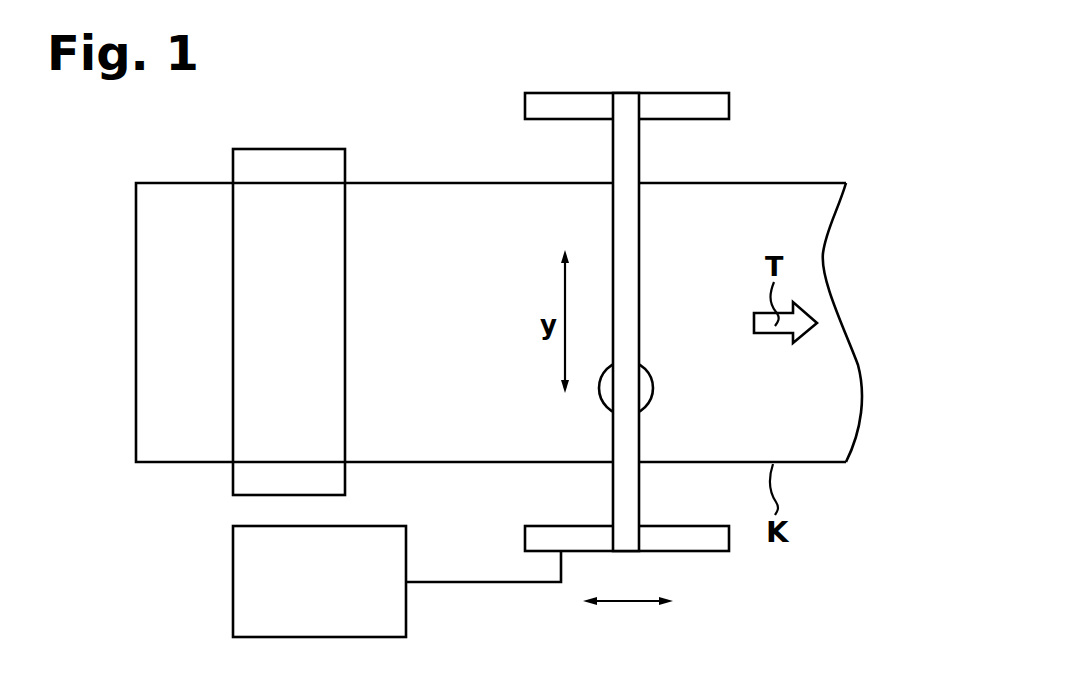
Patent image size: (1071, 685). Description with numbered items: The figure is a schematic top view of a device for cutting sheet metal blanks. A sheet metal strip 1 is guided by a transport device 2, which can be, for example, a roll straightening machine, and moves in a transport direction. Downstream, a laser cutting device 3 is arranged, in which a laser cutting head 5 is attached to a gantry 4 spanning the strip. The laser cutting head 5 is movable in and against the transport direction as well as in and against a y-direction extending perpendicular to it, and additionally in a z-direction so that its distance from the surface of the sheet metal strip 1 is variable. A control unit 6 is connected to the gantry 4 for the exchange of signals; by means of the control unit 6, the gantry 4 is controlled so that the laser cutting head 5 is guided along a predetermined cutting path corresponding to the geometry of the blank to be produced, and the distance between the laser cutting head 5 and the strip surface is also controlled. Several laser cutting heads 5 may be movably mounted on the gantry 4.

The sheet metal strip 1 is at (773, 202).
The transport device 2 is at (292, 170).
The laser cutting device 3 is at (712, 82).
The gantry 4 is at (627, 110).
The laser cutting head 5 is at (647, 386).
The control unit 6 is at (250, 585).